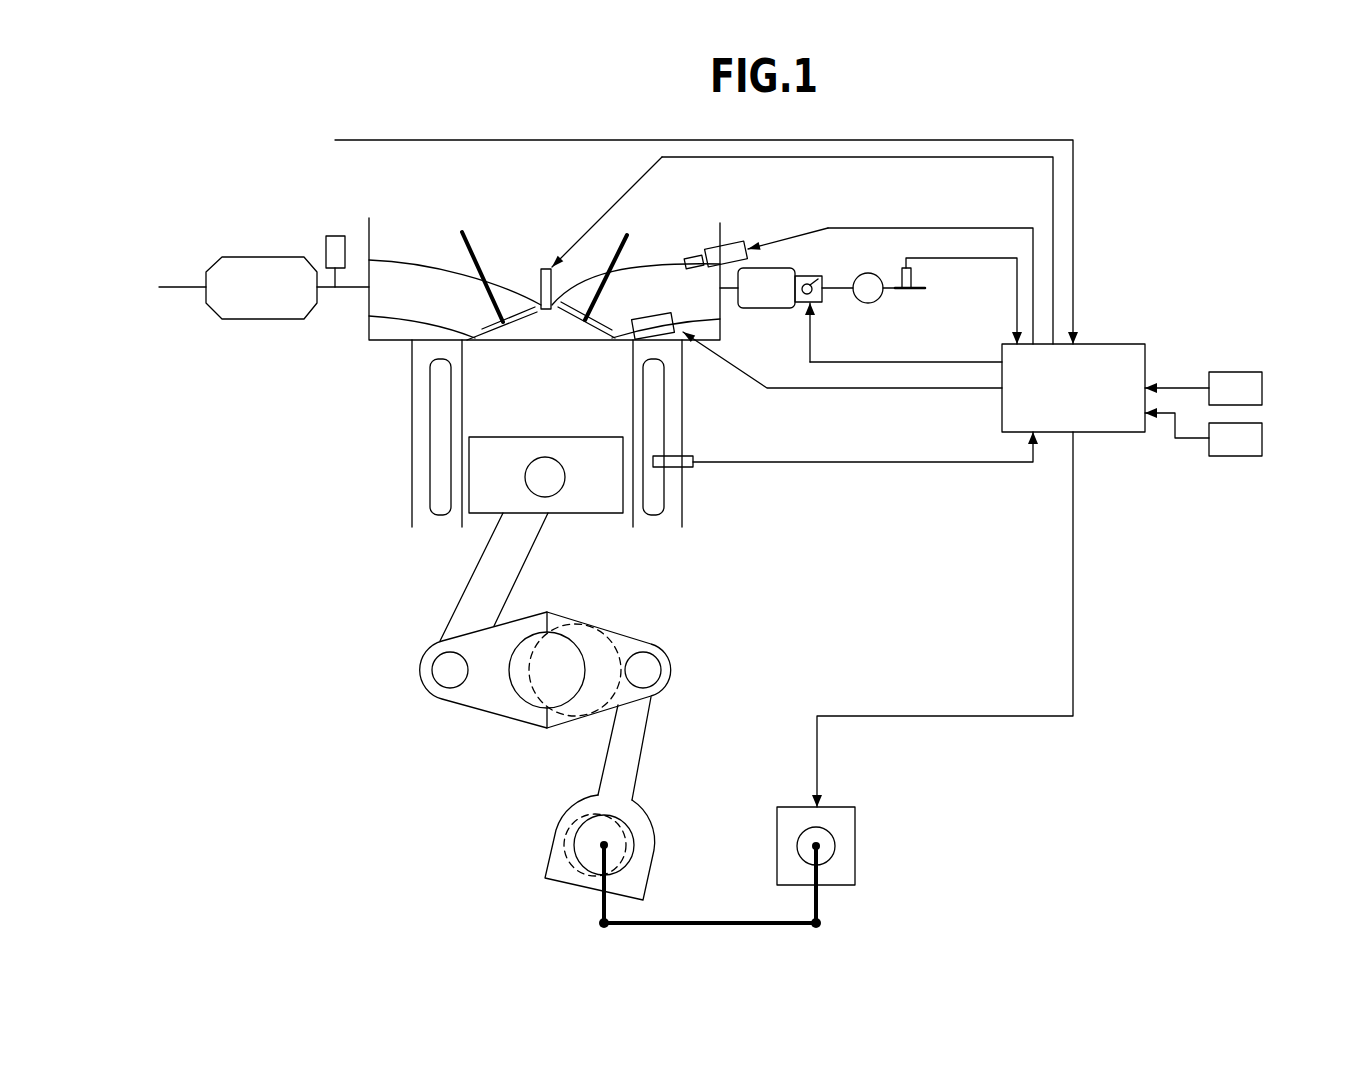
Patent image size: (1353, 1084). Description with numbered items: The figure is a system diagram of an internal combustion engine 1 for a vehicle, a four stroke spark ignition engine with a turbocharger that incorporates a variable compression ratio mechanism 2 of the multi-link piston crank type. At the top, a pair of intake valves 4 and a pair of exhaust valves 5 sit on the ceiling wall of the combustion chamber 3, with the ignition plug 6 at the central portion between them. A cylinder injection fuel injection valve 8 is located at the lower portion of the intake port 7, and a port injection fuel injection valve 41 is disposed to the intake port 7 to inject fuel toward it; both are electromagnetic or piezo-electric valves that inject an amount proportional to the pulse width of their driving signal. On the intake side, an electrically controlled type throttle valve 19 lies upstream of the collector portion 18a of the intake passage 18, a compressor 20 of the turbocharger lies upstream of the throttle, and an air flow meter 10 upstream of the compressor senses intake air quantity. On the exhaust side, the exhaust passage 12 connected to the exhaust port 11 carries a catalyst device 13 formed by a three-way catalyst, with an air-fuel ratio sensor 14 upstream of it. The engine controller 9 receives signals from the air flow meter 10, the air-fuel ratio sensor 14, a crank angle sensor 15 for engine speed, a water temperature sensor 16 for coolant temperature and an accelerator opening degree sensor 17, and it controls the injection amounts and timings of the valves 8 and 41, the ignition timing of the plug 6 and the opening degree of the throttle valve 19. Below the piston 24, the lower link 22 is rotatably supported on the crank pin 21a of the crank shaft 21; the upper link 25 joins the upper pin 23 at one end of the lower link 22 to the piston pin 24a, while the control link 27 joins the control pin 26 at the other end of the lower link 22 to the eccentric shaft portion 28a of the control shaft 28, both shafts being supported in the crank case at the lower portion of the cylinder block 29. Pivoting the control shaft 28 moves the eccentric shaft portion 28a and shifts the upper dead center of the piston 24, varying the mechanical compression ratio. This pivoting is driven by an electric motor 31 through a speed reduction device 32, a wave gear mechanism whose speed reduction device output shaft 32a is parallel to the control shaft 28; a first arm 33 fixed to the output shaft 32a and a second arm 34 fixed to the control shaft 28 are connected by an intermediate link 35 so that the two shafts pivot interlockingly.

The internal combustion engine 1 is at (383, 437).
The variable compression ratio mechanism 2 is at (510, 775).
The combustion chamber 3 is at (497, 338).
The intake valves 4 is at (587, 320).
The exhaust valves 5 is at (520, 320).
The ignition plug 6 is at (540, 283).
The intake port 7 is at (675, 283).
The cylinder injection fuel injection valve 8 is at (643, 322).
The engine controller 9 is at (1105, 355).
The air flow meter 10 is at (916, 280).
The exhaust port 11 is at (425, 270).
The exhaust passage 12 is at (182, 285).
The catalyst device 13 is at (243, 265).
The air-fuel ratio sensor 14 is at (327, 248).
The crank angle sensor 15 is at (1253, 388).
The water temperature sensor 16 is at (688, 455).
The accelerator opening degree sensor 17 is at (1253, 438).
The intake passage 18 is at (730, 290).
The collector portion 18a is at (772, 305).
The electrically controlled type throttle valve 19 is at (816, 303).
The compressor 20 is at (866, 303).
The crank shaft 21 is at (617, 650).
The crank pin 21a is at (522, 688).
The lower link 22 is at (527, 627).
The upper pin 23 is at (442, 670).
The piston 24 is at (597, 492).
The piston pin 24a is at (545, 482).
The upper link 25 is at (480, 585).
The control pin 26 is at (655, 670).
The control link 27 is at (635, 745).
The control shaft 28 is at (572, 828).
The eccentric shaft portion 28a is at (635, 837).
The cylinder block 29 is at (420, 478).
The electric motor 31 is at (848, 830).
The speed reduction device 32 is at (835, 845).
The speed reduction device output shaft 32a is at (805, 845).
The first arm 33 is at (820, 903).
The second arm 34 is at (600, 903).
The intermediate link 35 is at (715, 920).
The port injection fuel injection valve 41 is at (732, 250).